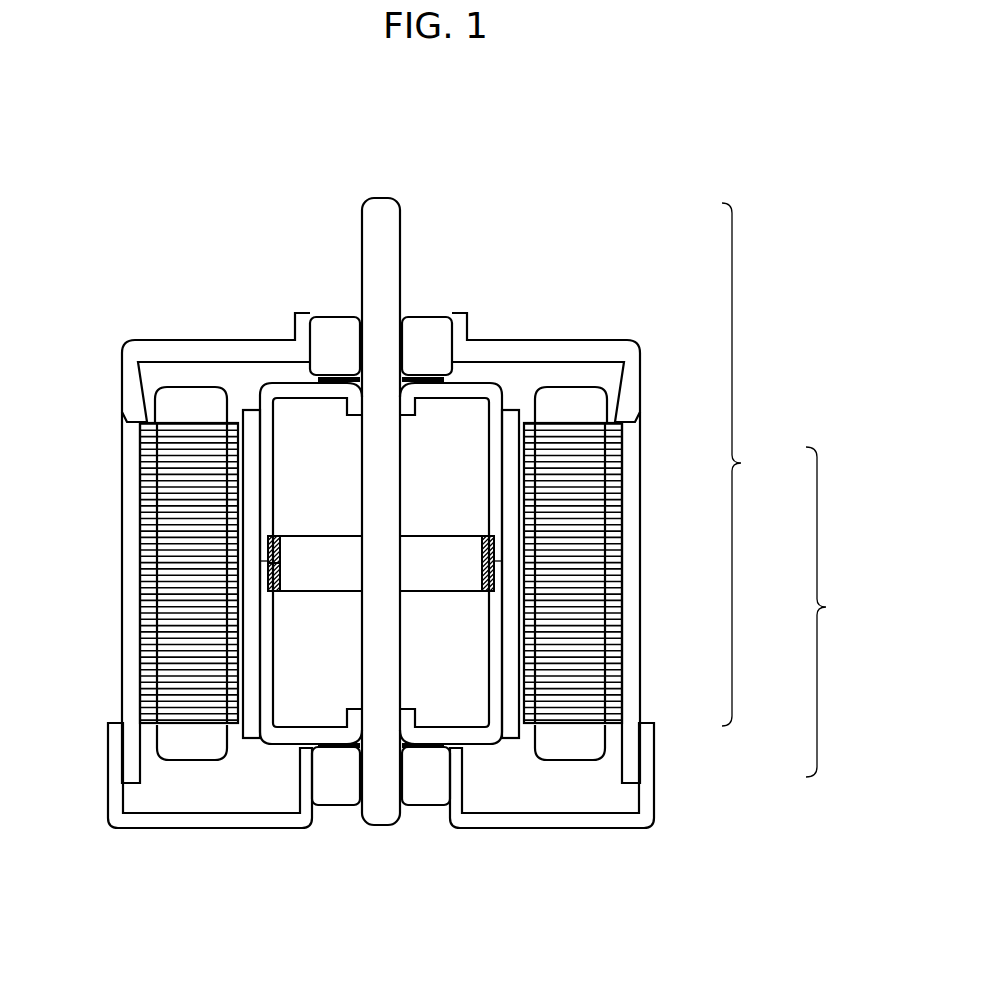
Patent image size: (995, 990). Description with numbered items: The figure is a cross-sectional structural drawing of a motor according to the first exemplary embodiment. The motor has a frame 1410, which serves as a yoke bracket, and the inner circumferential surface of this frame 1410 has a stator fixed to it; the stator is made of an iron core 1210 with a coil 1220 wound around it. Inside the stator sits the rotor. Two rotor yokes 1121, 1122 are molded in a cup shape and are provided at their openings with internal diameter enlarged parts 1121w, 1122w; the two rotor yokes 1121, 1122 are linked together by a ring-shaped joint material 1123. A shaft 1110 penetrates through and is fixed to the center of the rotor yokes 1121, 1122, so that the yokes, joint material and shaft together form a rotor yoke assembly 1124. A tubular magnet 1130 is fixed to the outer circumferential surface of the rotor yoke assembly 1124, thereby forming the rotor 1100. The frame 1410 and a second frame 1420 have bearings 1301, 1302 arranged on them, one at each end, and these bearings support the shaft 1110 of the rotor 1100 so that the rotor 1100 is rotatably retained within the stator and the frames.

The rotor 1100 is at (842, 612).
The shaft 1110 is at (403, 262).
The rotor yoke 1121 is at (423, 379).
The rotor yoke 1122 is at (503, 672).
The ring-shaped joint material 1123 is at (492, 570).
The rotor yoke assembly 1124 is at (759, 464).
The tubular magnet 1130 is at (522, 727).
The iron core 1210 is at (155, 538).
The coil 1220 is at (160, 390).
The bearing 1301 is at (337, 315).
The bearing 1302 is at (430, 806).
The frame 1410 is at (133, 338).
The frame 1420 is at (117, 830).
The internal diameter enlarged part 1121w is at (267, 547).
The internal diameter enlarged part 1122w is at (265, 573).